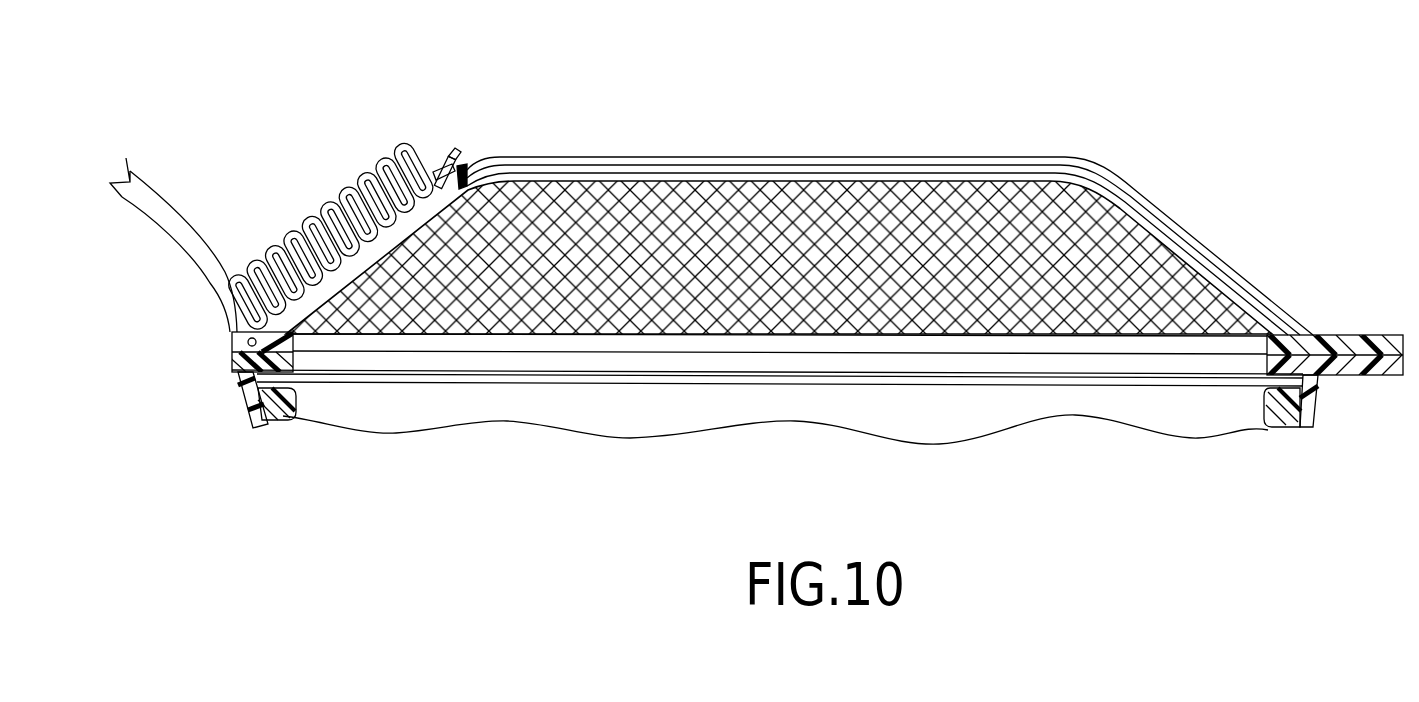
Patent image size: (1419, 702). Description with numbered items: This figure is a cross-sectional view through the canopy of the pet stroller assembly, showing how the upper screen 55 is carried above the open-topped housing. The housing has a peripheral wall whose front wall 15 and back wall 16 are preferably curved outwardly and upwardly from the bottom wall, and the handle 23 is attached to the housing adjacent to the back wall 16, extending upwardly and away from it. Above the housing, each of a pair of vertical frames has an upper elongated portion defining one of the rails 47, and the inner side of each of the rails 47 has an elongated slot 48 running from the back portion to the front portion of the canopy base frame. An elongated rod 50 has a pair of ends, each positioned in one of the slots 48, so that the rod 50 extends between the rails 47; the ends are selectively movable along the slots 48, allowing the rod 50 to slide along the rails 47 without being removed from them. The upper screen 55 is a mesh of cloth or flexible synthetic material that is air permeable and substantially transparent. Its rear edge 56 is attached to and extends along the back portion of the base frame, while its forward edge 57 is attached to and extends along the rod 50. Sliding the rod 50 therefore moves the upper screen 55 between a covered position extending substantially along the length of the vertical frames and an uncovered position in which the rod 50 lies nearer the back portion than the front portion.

The front wall 15 is at (1317, 402).
The back wall 16 is at (250, 410).
The handle 23 is at (170, 193).
The rails 47 is at (680, 157).
The elongated slot 48 is at (781, 178).
The rod 50 is at (480, 160).
The upper screen 55 is at (347, 177).
The rear edge 56 is at (232, 338).
The forward edge 57 is at (433, 158).